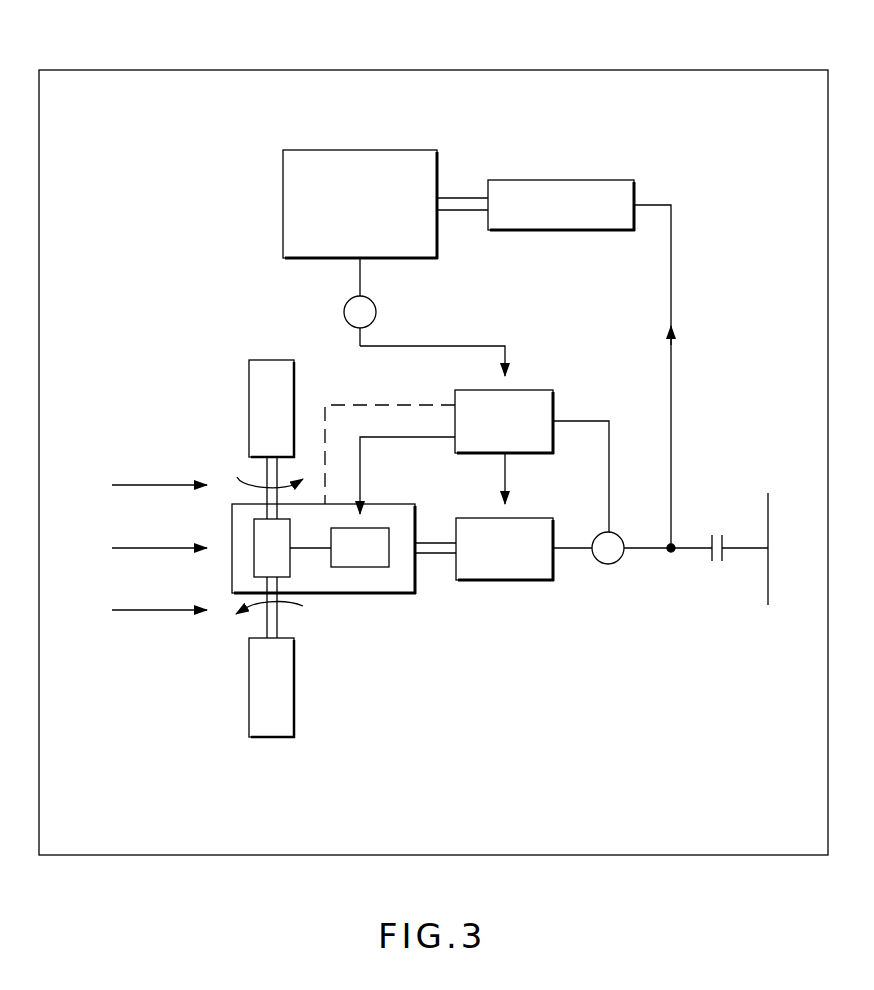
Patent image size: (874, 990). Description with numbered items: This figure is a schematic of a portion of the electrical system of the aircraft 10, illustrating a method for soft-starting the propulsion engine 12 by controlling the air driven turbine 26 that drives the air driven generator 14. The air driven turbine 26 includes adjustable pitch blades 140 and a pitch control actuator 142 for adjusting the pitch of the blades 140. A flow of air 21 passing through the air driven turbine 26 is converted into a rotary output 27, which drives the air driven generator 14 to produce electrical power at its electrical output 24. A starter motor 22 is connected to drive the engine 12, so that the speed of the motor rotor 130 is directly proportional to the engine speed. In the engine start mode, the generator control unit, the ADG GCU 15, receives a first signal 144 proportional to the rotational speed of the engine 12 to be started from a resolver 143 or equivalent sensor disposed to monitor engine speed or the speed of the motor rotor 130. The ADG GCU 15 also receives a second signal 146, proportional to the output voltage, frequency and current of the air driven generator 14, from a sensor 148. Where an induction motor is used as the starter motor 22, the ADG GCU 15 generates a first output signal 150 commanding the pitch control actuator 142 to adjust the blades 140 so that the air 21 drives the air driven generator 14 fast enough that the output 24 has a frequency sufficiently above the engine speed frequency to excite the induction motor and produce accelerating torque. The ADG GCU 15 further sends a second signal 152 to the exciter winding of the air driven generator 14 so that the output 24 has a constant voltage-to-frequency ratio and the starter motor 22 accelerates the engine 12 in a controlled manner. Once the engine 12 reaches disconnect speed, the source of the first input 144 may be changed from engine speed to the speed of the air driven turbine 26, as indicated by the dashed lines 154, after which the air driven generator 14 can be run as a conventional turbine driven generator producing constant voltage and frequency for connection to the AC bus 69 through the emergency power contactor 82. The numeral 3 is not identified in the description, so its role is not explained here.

The aircraft 10 is at (143, 70).
The propulsion engine 12 is at (298, 150).
The motor rotor 130 is at (460, 197).
The starter motor 22 is at (612, 180).
The resolver 143 is at (376, 314).
The first signal 144 is at (458, 346).
The generator control unit (ADG GCU) 15 is at (530, 390).
The dashed lines 154 is at (410, 405).
The first output signal 150 is at (384, 438).
The second signal 152 is at (506, 470).
The second signal 146 is at (611, 458).
The air driven electrical generator 14 is at (507, 580).
The rotary output 27 is at (434, 556).
The electrical output 24 is at (575, 550).
The sensor 148 is at (625, 560).
The contactor 3 is at (692, 548).
The AC bus 69 is at (770, 507).
The emergency power contactor 82 is at (725, 561).
The pitch control actuator 142 is at (360, 567).
The adjustable pitch blades 140 is at (267, 360).
The flow of air 21 is at (160, 487).
The air driven turbine 26 is at (296, 757).